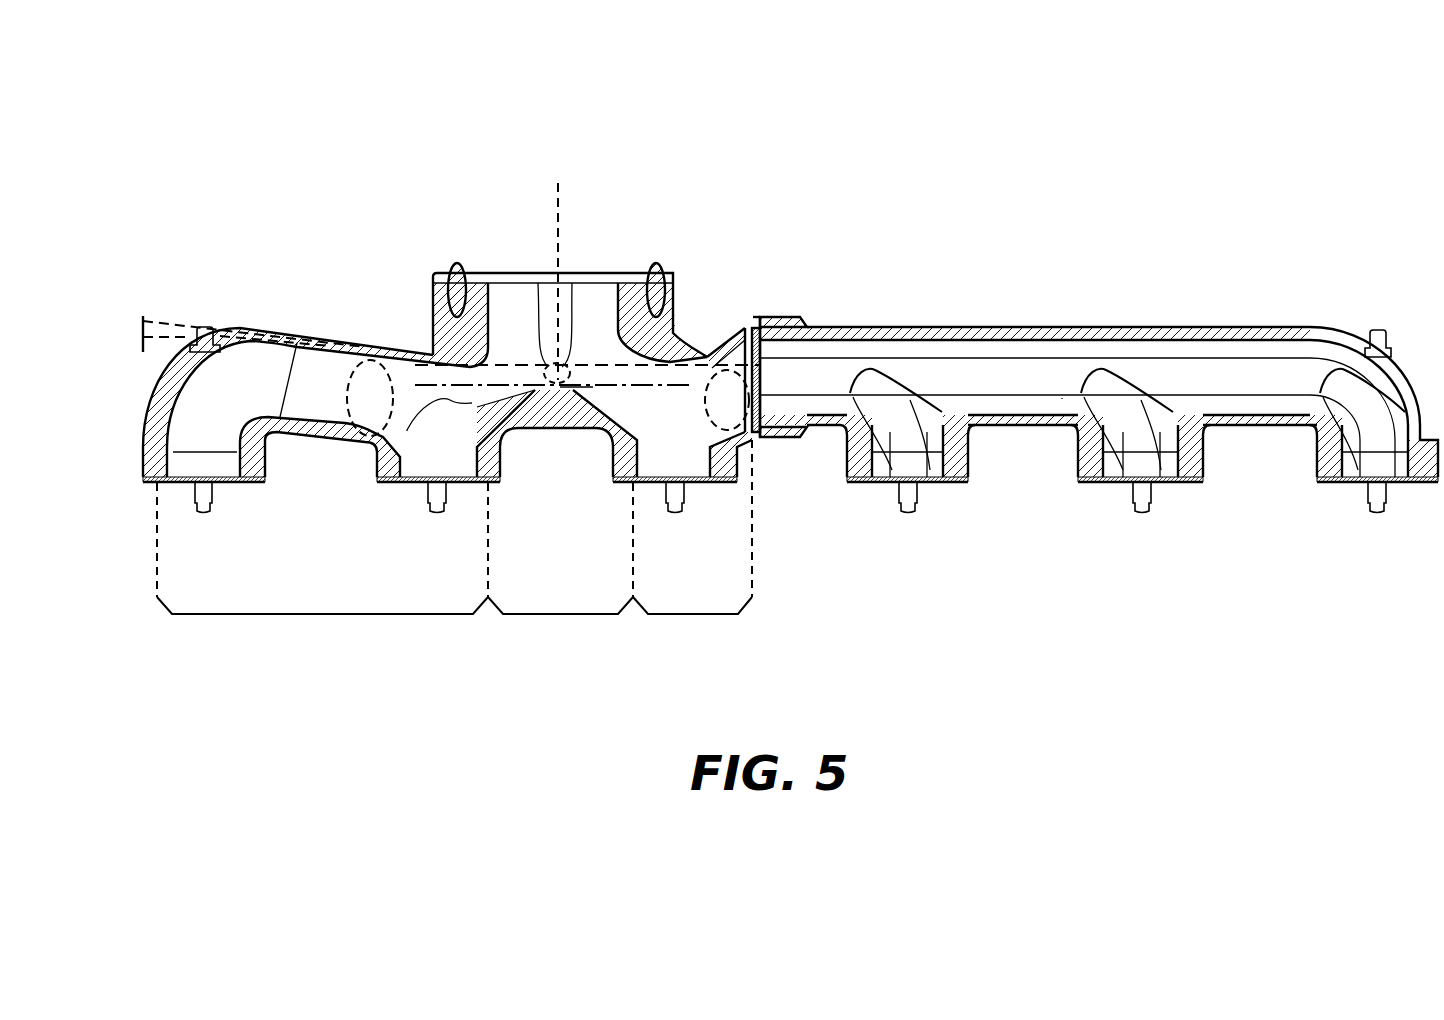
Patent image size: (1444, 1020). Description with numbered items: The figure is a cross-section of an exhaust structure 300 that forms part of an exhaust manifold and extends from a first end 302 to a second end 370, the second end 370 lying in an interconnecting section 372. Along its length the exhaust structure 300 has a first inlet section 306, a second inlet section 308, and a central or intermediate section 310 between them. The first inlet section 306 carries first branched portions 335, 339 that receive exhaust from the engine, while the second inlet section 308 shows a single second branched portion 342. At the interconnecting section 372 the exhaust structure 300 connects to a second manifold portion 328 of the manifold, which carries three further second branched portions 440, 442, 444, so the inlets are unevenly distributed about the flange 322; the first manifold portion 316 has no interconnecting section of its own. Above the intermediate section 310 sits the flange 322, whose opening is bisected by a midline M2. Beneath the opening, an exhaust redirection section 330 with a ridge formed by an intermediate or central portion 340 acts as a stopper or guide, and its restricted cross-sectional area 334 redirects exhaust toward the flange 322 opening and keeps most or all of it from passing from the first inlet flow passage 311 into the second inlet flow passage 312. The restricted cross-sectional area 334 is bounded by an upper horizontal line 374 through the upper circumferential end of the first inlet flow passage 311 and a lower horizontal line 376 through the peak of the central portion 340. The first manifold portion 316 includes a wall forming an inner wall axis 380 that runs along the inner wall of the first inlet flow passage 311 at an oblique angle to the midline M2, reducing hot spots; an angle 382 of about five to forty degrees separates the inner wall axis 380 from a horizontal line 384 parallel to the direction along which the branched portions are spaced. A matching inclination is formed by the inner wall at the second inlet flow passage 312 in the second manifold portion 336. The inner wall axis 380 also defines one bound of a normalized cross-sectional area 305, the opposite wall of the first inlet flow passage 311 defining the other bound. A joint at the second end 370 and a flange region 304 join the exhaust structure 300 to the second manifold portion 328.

The exhaust structure 300 is at (447, 375).
The first end 302 is at (147, 476).
The outlet flange 304 is at (797, 440).
The normalized cross-sectional area 305 is at (350, 420).
The first inlet section 306 is at (370, 617).
The second inlet section 308 is at (689, 617).
The central or intermediate section 310 is at (556, 617).
The first inlet flow passage 311 is at (310, 383).
The second inlet flow passage 312 is at (733, 322).
The first manifold portion 316 is at (340, 372).
The flange 322 is at (668, 280).
The second manifold portion 328 is at (1062, 398).
The exhaust redirection section 330 is at (530, 420).
The restricted cross-sectional area 334 is at (535, 372).
The first branched portion 335 is at (223, 472).
The second manifold portion 336 is at (754, 318).
The first branched portion 339 is at (427, 472).
The intermediate or central portion 340 is at (553, 383).
The second branched portion 342 is at (672, 472).
The second end 370 is at (767, 440).
The interconnecting section 372 is at (836, 316).
The upper horizontal line 374 is at (480, 320).
The lower horizontal line 376 is at (450, 380).
The inner wall axis 380 is at (160, 327).
The angle 382 is at (143, 323).
The horizontal line 384 is at (146, 348).
The second branched portion 440 is at (913, 470).
The second branched portion 442 is at (1133, 470).
The second branched portion 444 is at (1365, 470).
The midline M2 is at (557, 213).